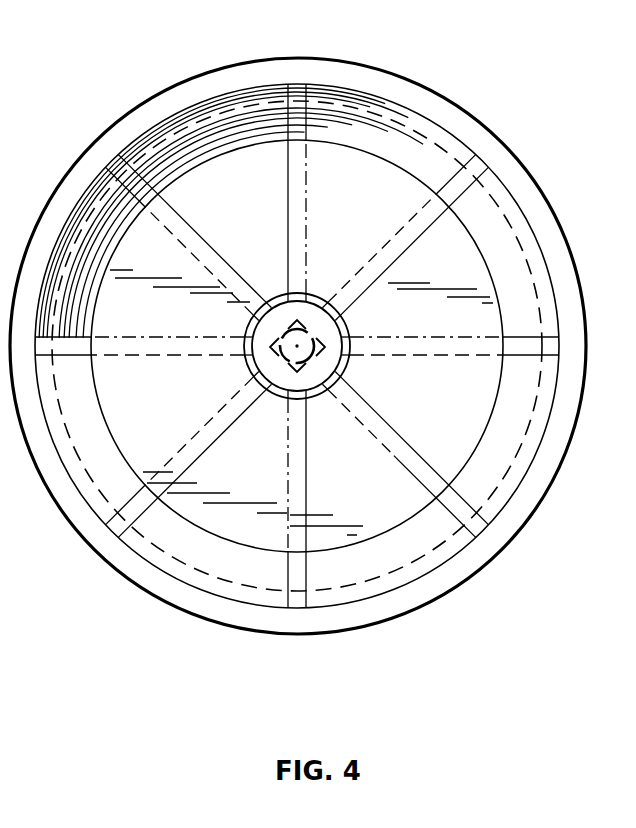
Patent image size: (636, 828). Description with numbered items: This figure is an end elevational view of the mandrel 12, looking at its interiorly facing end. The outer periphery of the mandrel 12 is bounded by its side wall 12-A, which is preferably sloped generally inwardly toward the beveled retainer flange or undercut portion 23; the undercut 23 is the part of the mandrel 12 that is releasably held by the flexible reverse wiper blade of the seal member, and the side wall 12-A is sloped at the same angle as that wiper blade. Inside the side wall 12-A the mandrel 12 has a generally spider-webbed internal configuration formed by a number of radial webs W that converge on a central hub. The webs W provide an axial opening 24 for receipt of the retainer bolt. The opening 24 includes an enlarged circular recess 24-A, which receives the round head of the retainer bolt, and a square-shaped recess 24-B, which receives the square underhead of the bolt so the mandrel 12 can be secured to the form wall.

The mandrel 12 is at (160, 90).
The side wall 12-A is at (110, 128).
The undercut portion 23 is at (352, 88).
The webs W is at (203, 240).
The axial opening 24 is at (307, 363).
The enlarged circular recess 24-A is at (283, 388).
The square-shaped recess 24-B is at (312, 296).